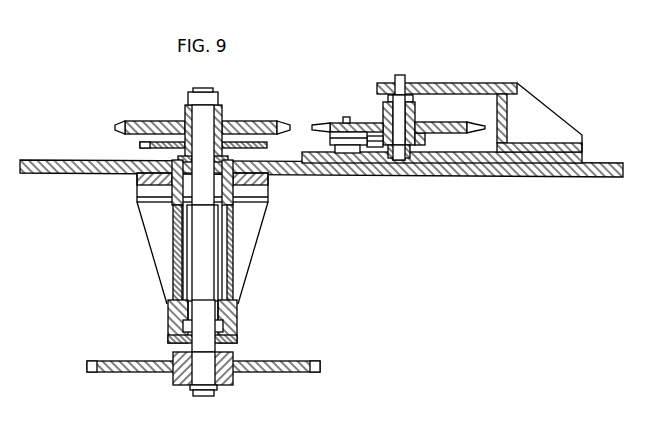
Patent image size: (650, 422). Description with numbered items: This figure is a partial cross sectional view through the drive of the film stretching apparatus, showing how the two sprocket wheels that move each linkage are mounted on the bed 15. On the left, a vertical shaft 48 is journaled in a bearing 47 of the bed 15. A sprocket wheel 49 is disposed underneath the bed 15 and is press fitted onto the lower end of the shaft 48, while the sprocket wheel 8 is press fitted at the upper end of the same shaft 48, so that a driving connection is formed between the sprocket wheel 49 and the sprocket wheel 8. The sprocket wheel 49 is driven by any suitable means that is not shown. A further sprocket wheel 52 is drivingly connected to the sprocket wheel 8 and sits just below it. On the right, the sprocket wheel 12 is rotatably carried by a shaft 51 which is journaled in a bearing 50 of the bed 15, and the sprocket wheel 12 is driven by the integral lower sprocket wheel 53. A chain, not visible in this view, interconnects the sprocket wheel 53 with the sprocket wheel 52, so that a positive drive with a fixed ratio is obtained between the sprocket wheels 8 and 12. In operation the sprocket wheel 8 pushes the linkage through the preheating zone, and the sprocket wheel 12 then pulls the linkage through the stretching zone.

The sprocket wheel 8 is at (249, 120).
The sprocket wheel 12 is at (436, 122).
The bed 15 is at (445, 178).
The bearing 47 is at (250, 240).
The shaft 48 is at (213, 281).
The sprocket wheel 49 is at (280, 361).
The bearing 50 is at (548, 120).
The shaft 51 is at (398, 80).
The sprocket wheel 52 is at (140, 145).
The lower sprocket wheel 53 is at (379, 136).